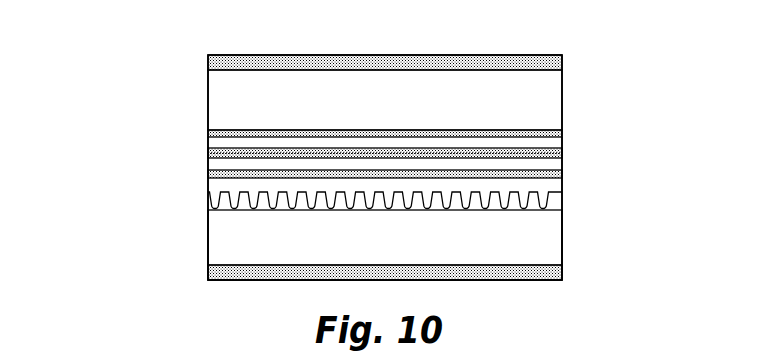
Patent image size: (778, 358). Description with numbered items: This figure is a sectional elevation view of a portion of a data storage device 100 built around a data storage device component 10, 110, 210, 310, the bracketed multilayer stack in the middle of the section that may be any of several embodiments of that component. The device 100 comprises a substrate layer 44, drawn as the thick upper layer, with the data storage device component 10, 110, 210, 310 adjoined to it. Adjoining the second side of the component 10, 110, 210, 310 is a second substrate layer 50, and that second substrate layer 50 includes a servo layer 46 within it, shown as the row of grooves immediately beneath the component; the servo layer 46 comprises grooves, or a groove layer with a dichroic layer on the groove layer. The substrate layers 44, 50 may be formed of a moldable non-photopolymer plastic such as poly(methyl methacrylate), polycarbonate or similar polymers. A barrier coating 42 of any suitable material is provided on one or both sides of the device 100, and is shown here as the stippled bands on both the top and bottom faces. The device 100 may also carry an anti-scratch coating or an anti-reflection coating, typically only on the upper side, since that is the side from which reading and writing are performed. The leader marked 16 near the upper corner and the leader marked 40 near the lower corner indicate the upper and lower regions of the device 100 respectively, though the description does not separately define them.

The data storage device 100 is at (587, 27).
The multilayer construction 16 is at (204, 50).
The barrier coating 42 is at (562, 57).
The substrate layer 44 is at (204, 97).
The second substrate layer 50 is at (204, 231).
The substrate 40 is at (187, 288).
The servo layer 46 is at (570, 205).
The data storage device component 10 is at (293, 161).
The data storage device component 110 is at (385, 161).
The data storage device component 210 is at (385, 161).
The data storage device component 310 is at (200, 132).